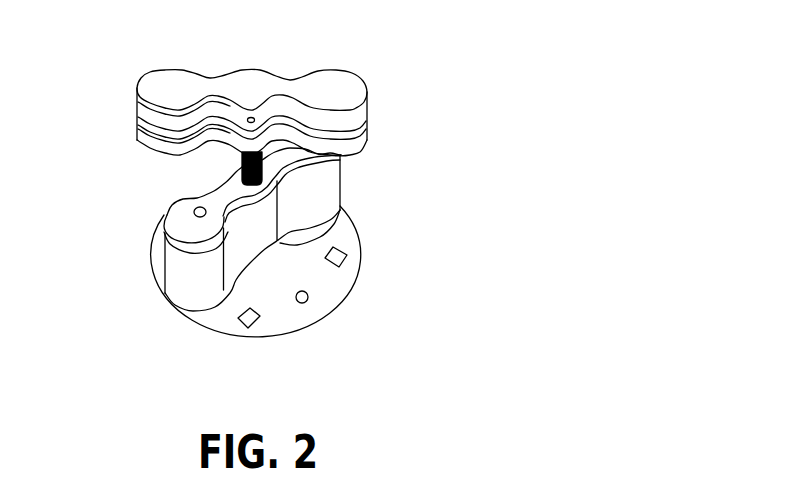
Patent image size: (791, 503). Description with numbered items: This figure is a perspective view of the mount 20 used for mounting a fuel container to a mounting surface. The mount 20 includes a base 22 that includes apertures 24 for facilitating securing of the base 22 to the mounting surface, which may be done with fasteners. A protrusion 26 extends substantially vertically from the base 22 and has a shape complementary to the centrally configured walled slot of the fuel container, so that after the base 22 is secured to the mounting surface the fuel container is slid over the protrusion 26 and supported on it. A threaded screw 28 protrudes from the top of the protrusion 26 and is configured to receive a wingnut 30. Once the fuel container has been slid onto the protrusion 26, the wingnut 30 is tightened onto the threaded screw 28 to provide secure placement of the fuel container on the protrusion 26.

The mount 20 is at (381, 56).
The base 22 is at (343, 242).
The apertures 24 is at (342, 267).
The protrusion 26 is at (175, 258).
The threaded screw 28 is at (240, 166).
The wingnut 30 is at (135, 105).